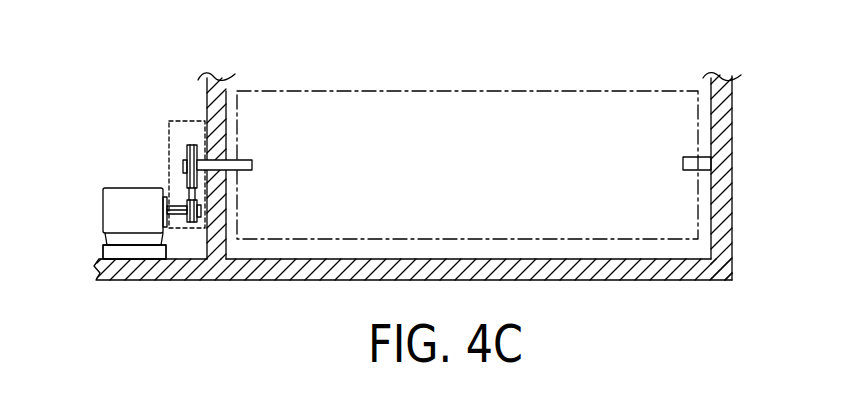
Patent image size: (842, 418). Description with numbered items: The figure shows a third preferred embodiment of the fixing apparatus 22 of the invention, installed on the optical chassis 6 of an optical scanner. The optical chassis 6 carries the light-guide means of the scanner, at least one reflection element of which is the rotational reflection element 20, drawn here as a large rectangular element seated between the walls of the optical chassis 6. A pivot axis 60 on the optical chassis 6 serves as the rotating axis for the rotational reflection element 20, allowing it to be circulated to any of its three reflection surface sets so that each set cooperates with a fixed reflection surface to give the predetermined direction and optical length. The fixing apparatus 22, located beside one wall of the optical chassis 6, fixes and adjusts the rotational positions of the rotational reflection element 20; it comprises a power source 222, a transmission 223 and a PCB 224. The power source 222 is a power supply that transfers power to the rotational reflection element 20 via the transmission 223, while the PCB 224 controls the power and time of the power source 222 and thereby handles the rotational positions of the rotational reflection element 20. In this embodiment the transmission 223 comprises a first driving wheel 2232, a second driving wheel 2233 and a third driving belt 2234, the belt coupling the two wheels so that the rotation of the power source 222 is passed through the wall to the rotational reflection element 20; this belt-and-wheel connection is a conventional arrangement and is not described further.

The optical chassis 6 is at (732, 90).
The pivot axis 60 is at (700, 167).
The rotational reflection element 20 is at (442, 105).
The fixing apparatus 22 is at (193, 67).
The power source 222 is at (117, 208).
The PCB 224 is at (133, 253).
The transmission 223 is at (169, 121).
The first driving wheel 2232 is at (207, 183).
The second driving wheel 2233 is at (150, 283).
The third driving belt 2234 is at (192, 224).